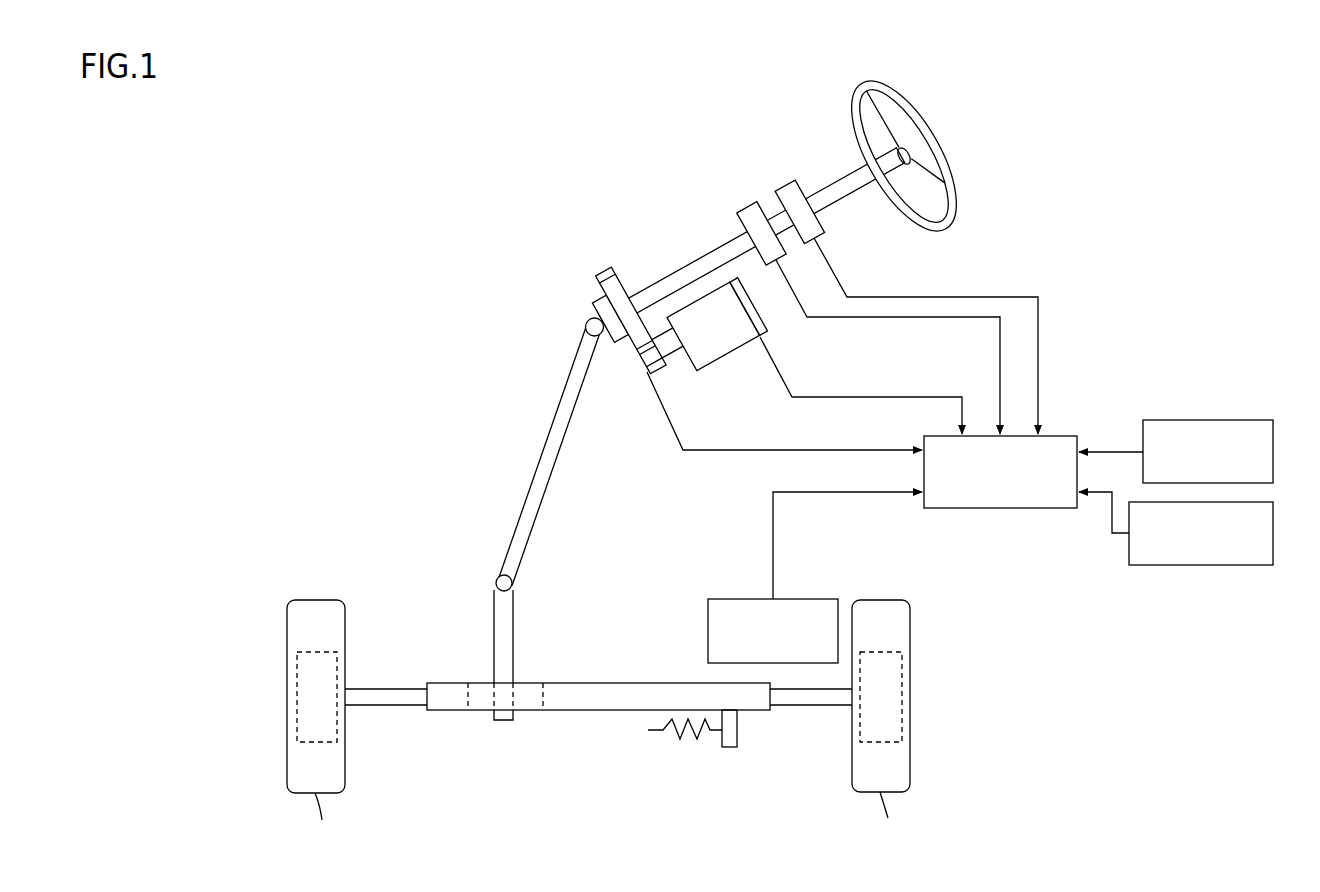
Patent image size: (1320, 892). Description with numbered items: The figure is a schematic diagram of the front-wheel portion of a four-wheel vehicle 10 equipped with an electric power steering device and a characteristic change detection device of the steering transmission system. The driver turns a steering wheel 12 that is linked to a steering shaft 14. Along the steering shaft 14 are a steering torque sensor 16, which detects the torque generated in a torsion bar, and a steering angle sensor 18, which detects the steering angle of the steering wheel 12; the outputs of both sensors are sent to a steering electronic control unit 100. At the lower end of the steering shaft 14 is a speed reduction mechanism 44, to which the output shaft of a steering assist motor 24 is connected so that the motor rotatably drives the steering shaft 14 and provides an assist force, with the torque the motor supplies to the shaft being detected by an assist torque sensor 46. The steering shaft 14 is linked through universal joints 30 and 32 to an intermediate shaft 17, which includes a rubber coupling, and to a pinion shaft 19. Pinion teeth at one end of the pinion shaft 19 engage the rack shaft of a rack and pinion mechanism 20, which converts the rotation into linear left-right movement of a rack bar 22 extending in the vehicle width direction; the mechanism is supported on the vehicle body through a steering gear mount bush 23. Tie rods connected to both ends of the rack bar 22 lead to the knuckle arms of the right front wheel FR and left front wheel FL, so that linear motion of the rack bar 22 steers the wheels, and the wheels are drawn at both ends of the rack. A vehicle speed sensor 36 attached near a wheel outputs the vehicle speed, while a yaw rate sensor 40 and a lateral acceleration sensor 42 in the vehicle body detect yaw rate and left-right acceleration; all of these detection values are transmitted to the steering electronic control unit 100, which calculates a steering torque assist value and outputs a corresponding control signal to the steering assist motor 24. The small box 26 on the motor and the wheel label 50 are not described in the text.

The vehicle 10 is at (330, 119).
The steering wheel 12 is at (928, 142).
The steering shaft 14 is at (842, 185).
The steering torque sensor 16 is at (790, 197).
The intermediate shaft 17 is at (540, 448).
The steering angle sensor 18 is at (750, 217).
The pinion shaft 19 is at (494, 634).
The rack and pinion mechanism 20 is at (600, 712).
The rack bar 22 is at (384, 708).
The steering gear mount bush 23 is at (675, 741).
The steering assist motor 24 is at (728, 362).
The rotation angle sensor 26 is at (765, 318).
The universal joint 30 is at (584, 326).
The universal joint 32 is at (497, 584).
The vehicle speed sensor 36 is at (808, 599).
The yaw rate sensor 40 is at (1210, 420).
The lateral acceleration sensor 42 is at (1210, 566).
The speed reduction mechanism 44 is at (603, 272).
The assist torque sensor 46 is at (590, 298).
The steered wheel 50 is at (292, 697).
The steering electronic control unit 100 is at (1003, 510).